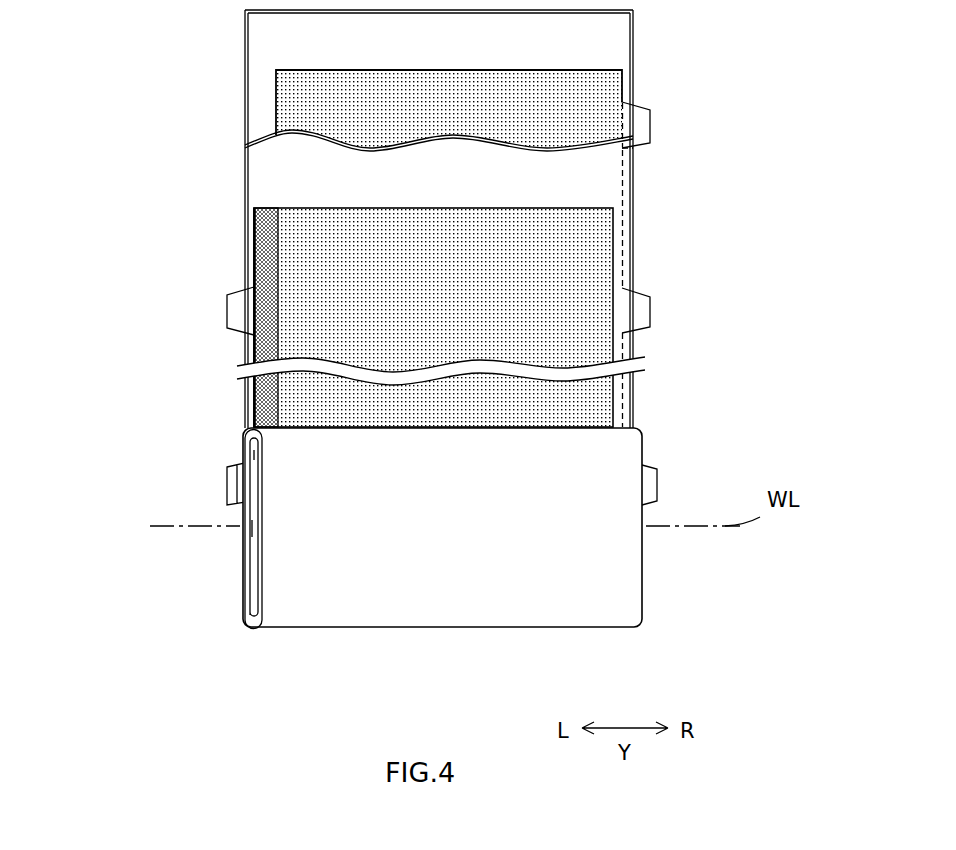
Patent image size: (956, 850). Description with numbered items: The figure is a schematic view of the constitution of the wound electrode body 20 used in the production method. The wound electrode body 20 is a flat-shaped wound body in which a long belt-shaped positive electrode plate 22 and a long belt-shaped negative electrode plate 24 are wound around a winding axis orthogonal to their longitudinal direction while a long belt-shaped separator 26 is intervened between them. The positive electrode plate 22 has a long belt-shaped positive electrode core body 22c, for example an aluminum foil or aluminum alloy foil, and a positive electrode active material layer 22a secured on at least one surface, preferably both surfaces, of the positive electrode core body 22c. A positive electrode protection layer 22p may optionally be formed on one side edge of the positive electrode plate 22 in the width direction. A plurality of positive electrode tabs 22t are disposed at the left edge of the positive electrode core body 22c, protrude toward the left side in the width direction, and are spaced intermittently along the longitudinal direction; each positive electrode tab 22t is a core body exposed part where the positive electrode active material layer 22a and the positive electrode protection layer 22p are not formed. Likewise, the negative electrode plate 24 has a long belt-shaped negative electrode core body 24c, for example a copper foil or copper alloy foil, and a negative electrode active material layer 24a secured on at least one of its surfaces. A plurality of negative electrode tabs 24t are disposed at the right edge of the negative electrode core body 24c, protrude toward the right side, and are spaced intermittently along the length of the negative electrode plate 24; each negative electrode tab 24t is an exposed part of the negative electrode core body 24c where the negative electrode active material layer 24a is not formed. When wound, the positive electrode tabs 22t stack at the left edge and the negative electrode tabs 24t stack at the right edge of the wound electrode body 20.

The wound electrode body 20 is at (503, 603).
The positive electrode plate 22 is at (324, 355).
The positive electrode active material layer 22a is at (310, 272).
The positive electrode protection layer 22p is at (266, 222).
The positive electrode core body 22c is at (254, 352).
The positive electrode tab 22t is at (208, 396).
The negative electrode plate 24 is at (541, 286).
The negative electrode active material layer 24a is at (598, 94).
The negative electrode core body 24c is at (622, 223).
The negative electrode tab 24t is at (646, 126).
The separator 26 is at (267, 32).